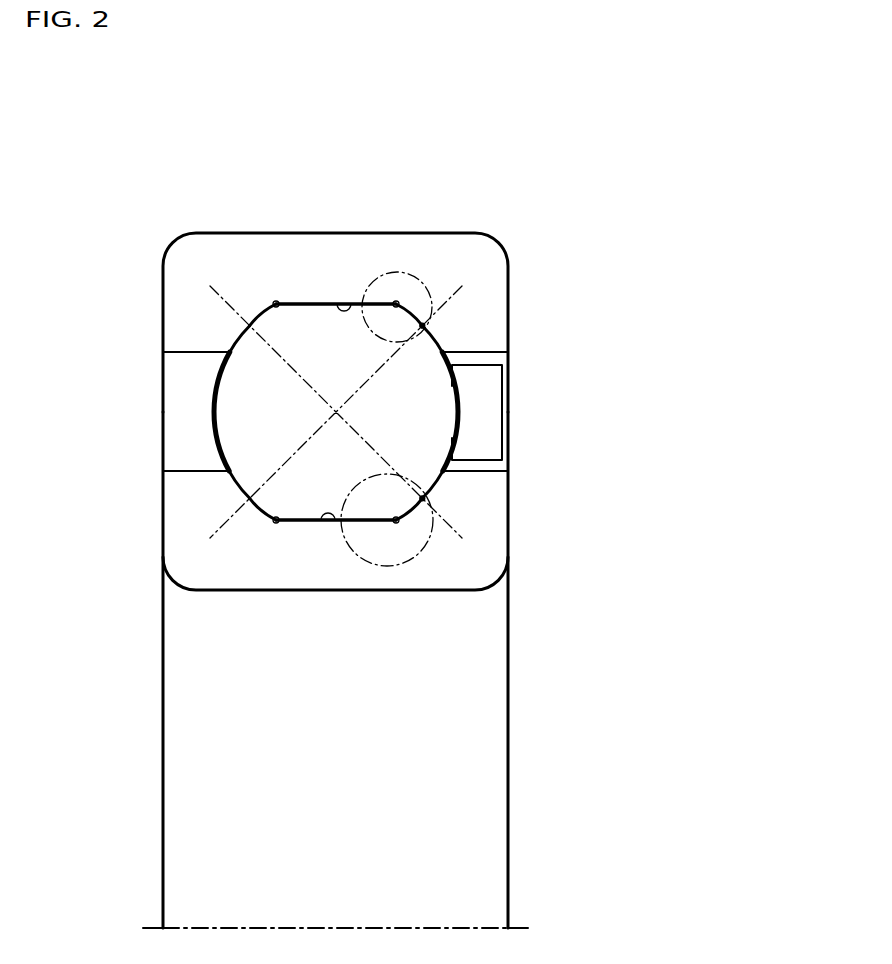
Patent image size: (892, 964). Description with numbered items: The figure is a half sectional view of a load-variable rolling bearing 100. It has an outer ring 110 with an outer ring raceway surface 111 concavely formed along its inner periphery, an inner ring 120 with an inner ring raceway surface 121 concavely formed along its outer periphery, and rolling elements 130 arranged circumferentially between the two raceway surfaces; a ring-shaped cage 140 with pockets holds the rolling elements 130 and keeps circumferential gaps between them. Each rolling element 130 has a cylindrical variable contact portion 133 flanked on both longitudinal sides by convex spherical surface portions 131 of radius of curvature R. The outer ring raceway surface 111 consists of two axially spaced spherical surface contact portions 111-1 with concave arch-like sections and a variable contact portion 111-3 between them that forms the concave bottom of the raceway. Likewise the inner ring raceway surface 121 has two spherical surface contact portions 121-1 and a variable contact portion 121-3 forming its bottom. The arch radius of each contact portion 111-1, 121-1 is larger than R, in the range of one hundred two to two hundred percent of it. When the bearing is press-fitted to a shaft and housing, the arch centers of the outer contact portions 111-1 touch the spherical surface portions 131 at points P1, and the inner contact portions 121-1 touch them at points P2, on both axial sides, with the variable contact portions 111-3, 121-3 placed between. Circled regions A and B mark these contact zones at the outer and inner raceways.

The load-variable rolling bearing 100 is at (525, 146).
The outer ring 110 is at (459, 244).
The outer ring raceway surface 111 is at (272, 287).
The spherical surface contact portion 111-1 is at (262, 314).
The variable contact portion 111-3 is at (323, 303).
The inner ring 120 is at (490, 548).
The inner ring raceway surface 121 is at (251, 560).
The spherical surface contact portion 121-1 is at (258, 508).
The variable contact portion 121-3 is at (306, 522).
The rolling element 130 is at (233, 435).
The spherical surface portion 131 is at (217, 388).
The variable contact portion 133 is at (344, 308).
The cage 140 is at (487, 387).
The contact point P1 is at (249, 326).
The contact point P2 is at (249, 498).
The radius of curvature R is at (277, 392).
The detail region A is at (405, 295).
The detail region B is at (401, 529).